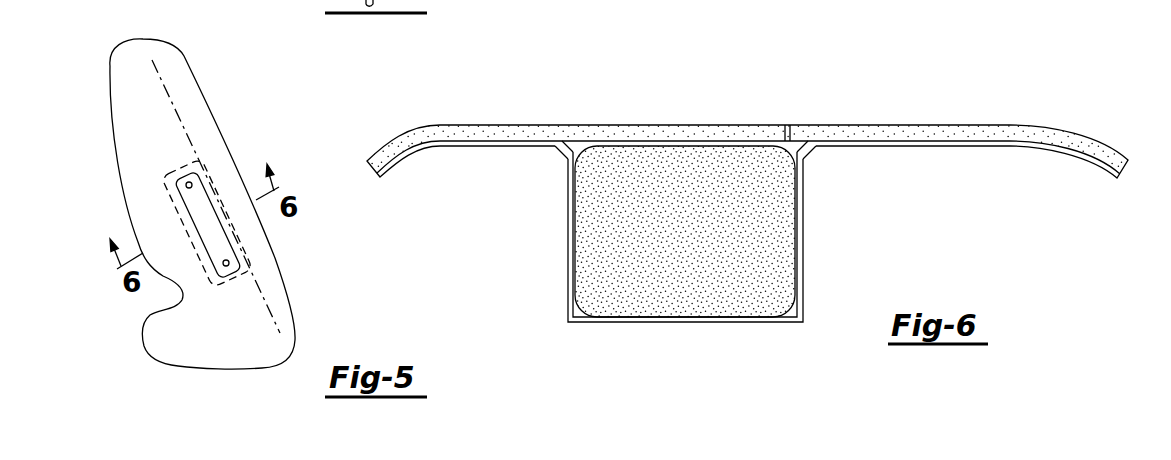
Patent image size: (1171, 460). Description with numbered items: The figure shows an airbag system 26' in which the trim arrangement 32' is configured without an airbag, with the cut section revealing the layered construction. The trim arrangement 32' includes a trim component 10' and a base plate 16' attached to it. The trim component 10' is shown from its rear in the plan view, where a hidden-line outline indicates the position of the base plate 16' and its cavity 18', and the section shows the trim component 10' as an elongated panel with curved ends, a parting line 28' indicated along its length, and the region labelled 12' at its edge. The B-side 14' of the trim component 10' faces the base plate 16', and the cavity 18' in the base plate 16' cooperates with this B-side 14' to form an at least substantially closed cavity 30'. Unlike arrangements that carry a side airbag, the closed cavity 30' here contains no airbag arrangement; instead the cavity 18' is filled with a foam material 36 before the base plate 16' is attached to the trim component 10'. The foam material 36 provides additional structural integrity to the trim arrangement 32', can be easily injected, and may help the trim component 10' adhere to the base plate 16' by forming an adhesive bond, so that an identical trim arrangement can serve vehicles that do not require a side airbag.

In FIG. 5, the trim component 10' is at (186, 190).
In FIG. 6, the trim component 10' is at (747, 217).
In FIG. 5, the body panel 12' is at (180, 204).
In FIG. 6, the B-side 14' is at (725, 234).
In FIG. 6, the base plate 16' is at (1069, 168).
In FIG. 5, the cavity 18' is at (243, 222).
In FIG. 5, the airbag system 26' is at (240, 35).
In FIG. 6, the airbag system 26' is at (747, 114).
In FIG. 5, the parting line 28' is at (216, 178).
In FIG. 6, the parting line 28' is at (817, 108).
In FIG. 6, the closed cavity 30' is at (713, 163).
In FIG. 5, the trim arrangement 32' is at (77, 180).
In FIG. 6, the trim arrangement 32' is at (445, 120).
In FIG. 6, the foam material 36 is at (650, 295).